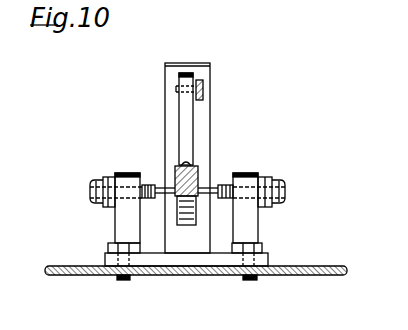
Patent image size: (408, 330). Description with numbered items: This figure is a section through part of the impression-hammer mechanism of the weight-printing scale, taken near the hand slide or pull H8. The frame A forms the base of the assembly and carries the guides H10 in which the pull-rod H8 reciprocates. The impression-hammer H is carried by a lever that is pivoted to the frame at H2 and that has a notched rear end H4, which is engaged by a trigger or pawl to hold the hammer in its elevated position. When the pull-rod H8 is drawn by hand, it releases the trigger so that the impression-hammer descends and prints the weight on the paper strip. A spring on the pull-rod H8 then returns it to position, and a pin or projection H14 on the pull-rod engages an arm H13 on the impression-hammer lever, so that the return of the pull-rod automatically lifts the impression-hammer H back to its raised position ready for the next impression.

The impression-hammer H is at (187, 169).
The pivot H2 is at (207, 195).
The notched rear end H4 is at (189, 223).
The hand slide or pull H8 is at (203, 86).
The guides H10 is at (211, 72).
The arm H13 is at (193, 114).
The pin or projection H14 is at (178, 89).
The frame A is at (293, 276).